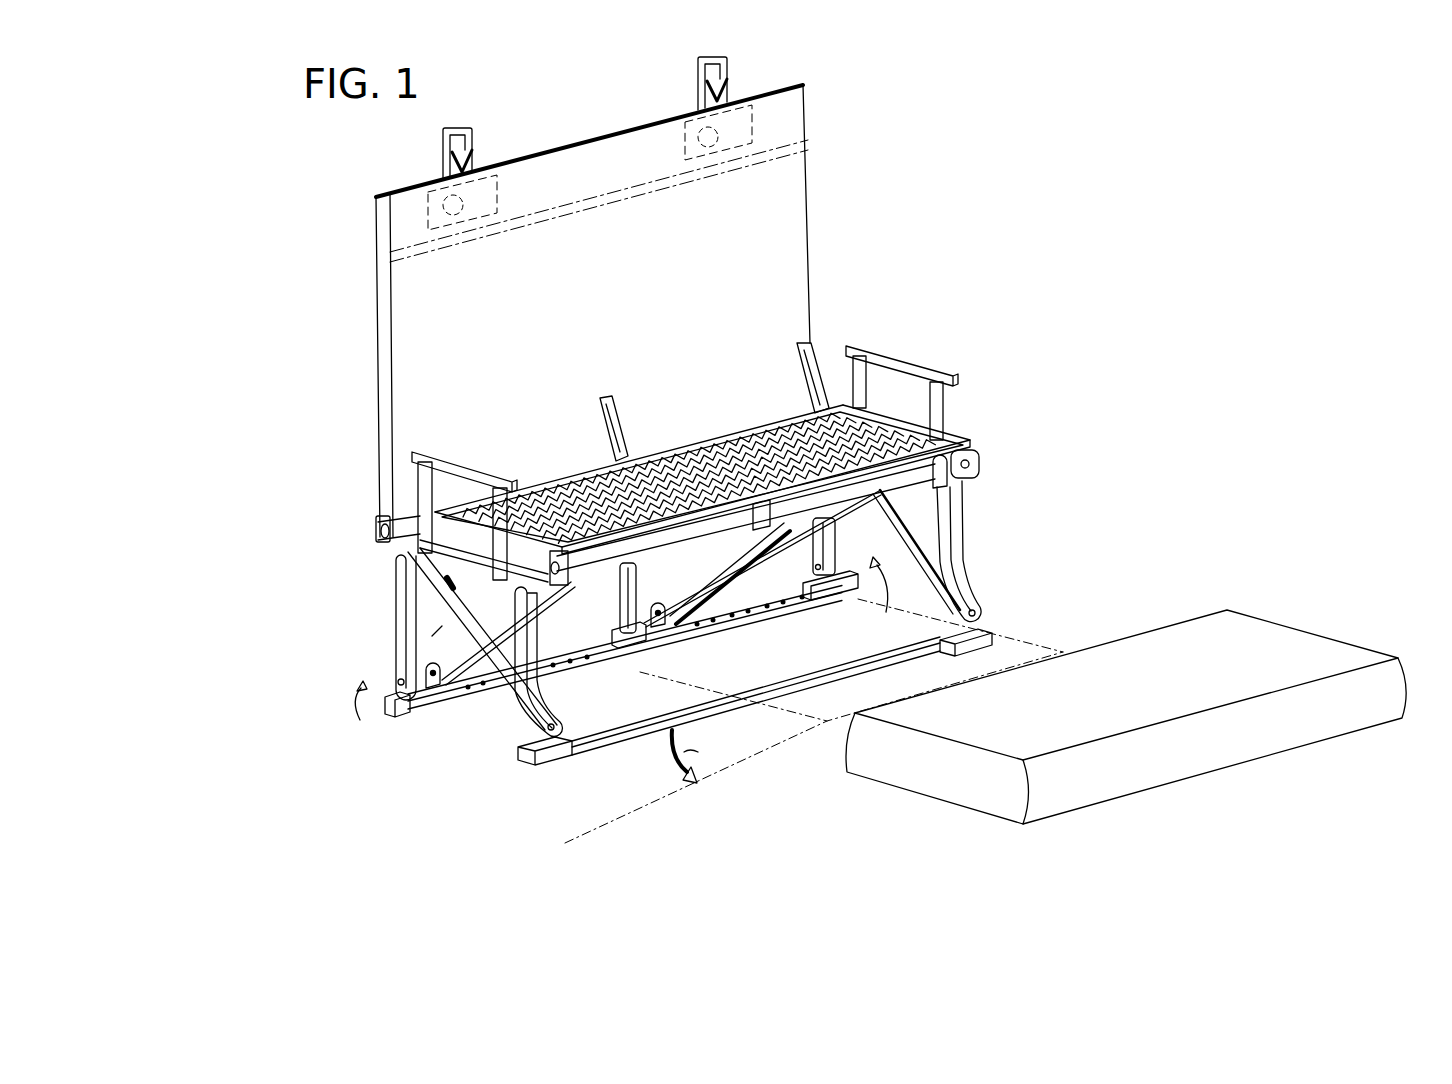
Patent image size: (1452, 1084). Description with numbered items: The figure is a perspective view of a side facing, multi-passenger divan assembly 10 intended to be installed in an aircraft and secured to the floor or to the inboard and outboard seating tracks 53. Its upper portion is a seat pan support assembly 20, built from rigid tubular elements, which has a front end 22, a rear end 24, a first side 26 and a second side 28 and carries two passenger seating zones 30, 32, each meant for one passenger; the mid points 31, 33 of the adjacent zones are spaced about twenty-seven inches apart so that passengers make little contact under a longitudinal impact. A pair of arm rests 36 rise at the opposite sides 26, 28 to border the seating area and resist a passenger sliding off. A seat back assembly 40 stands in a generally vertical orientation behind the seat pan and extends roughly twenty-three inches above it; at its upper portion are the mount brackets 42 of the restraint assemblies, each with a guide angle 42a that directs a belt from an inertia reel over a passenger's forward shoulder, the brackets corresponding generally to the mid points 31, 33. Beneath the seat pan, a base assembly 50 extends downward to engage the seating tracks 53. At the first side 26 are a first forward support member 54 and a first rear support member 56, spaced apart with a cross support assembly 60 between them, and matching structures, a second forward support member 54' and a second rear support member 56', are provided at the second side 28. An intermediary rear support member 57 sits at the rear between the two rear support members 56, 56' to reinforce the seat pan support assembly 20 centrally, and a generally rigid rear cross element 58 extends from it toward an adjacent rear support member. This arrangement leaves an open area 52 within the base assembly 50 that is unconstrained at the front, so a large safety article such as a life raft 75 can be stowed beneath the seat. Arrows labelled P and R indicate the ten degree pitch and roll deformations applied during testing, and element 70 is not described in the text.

The side facing, multi-passenger divan assembly 10 is at (1236, 257).
The seat pan support assembly 20 is at (828, 404).
The front end 22 is at (683, 513).
The rear end 24 is at (642, 462).
The first side 26 is at (445, 586).
The second side 28 is at (893, 418).
The passenger seating zone 30 is at (544, 462).
The mid point 31 is at (598, 497).
The passenger seating zone 32 is at (719, 416).
The mid point 33 is at (760, 398).
The arm rests 36 is at (462, 462).
The seat back assembly 40 is at (780, 246).
The mount bracket 42 is at (483, 163).
The guide angle 42a is at (426, 170).
The base assembly 50 is at (1004, 521).
The open area 52 is at (622, 596).
The seating tracks 53 is at (745, 620).
The first forward support member 54 is at (513, 666).
The second forward support member 54' is at (991, 551).
The first rear support member 56 is at (373, 627).
The second rear support member 56' is at (802, 586).
The intermediary rear support member 57 is at (632, 650).
The rear cross element 58 is at (555, 623).
The cross support assembly 60 is at (938, 526).
The hinge 70 is at (371, 551).
The life raft 75 is at (1043, 732).